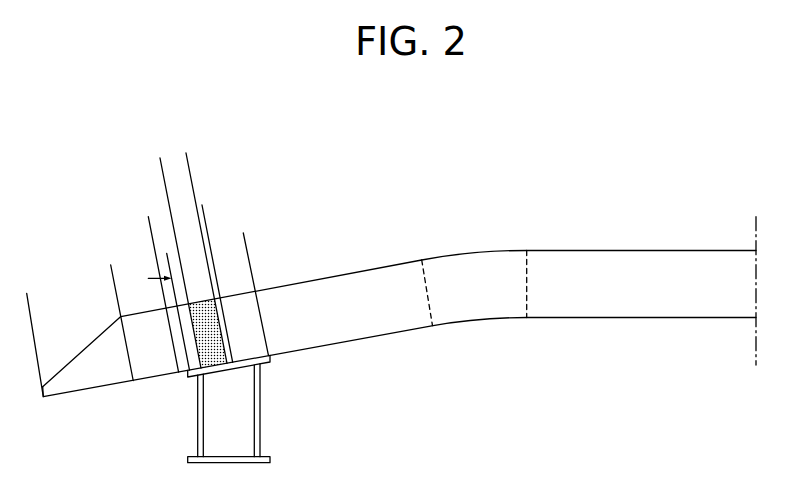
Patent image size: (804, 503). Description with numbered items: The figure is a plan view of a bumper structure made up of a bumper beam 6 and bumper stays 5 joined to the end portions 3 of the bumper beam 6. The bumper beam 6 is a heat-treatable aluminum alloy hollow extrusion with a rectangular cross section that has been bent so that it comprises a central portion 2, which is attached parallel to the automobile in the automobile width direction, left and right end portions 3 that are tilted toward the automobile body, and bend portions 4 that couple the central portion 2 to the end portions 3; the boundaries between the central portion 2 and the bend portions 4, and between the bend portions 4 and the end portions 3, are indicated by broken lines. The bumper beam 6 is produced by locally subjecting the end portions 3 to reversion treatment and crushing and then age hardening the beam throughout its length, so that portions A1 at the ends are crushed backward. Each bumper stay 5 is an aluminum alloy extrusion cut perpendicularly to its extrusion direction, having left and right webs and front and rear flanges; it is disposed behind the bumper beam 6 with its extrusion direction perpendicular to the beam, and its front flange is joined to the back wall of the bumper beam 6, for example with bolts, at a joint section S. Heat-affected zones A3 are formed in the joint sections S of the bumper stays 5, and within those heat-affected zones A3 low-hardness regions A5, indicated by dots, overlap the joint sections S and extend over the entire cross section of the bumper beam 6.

The central portion 2 is at (634, 260).
The end portion 3 is at (377, 328).
The bend portion 4 is at (477, 259).
The bumper stay 5 is at (260, 423).
The bumper beam 6 is at (592, 161).
The crushed portion A1 is at (108, 288).
The heat-affected zone A3 is at (123, 230).
The low-hardness region A5 is at (138, 173).
The joint section S is at (256, 260).